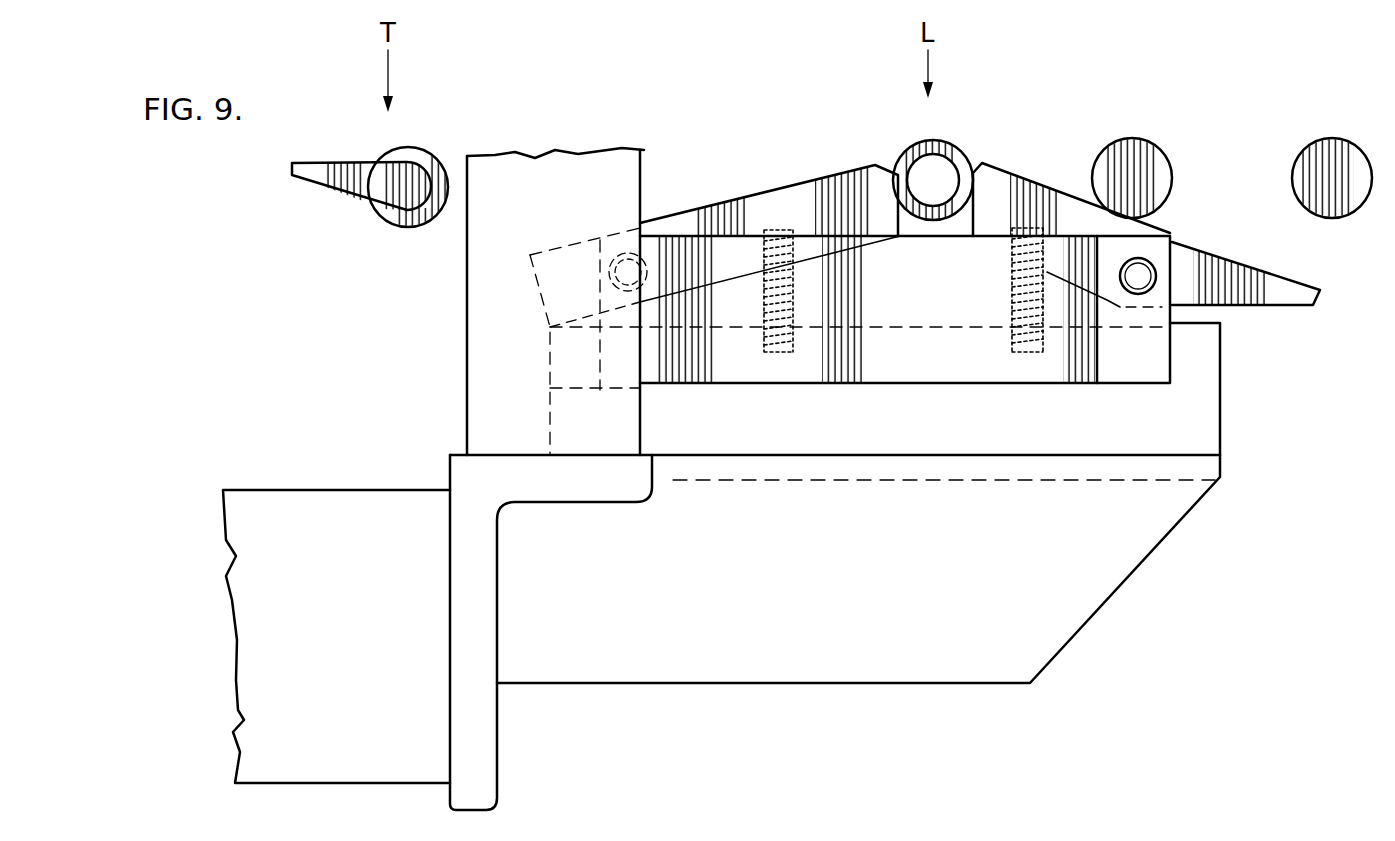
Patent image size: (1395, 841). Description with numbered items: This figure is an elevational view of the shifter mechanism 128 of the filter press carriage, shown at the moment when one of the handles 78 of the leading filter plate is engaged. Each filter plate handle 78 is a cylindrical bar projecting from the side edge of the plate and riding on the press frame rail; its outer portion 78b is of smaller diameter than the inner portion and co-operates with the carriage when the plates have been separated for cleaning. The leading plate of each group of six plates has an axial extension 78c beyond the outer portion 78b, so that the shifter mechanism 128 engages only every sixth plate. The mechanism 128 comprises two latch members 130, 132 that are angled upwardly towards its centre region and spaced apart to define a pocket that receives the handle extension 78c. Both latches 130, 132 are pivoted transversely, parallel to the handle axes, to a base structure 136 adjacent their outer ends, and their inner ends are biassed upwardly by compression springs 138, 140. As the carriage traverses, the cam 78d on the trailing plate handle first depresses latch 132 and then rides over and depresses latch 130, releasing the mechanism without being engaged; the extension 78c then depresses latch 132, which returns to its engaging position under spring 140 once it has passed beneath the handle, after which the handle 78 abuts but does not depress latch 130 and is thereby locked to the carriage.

The handle 78 is at (416, 240).
The outer portion 78b is at (1297, 157).
The axial extension 78c is at (940, 172).
The cam 78d is at (360, 172).
The shifter mechanism 128 is at (1190, 348).
The latch member 130 is at (812, 177).
The latch member 132 is at (990, 215).
The base structure 136 is at (943, 363).
The compression spring 138 is at (793, 345).
The compression spring 140 is at (1045, 352).